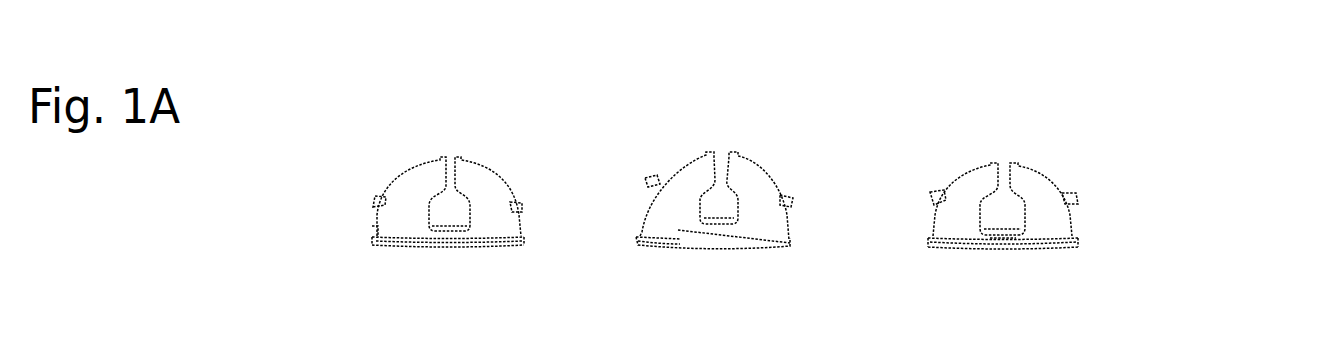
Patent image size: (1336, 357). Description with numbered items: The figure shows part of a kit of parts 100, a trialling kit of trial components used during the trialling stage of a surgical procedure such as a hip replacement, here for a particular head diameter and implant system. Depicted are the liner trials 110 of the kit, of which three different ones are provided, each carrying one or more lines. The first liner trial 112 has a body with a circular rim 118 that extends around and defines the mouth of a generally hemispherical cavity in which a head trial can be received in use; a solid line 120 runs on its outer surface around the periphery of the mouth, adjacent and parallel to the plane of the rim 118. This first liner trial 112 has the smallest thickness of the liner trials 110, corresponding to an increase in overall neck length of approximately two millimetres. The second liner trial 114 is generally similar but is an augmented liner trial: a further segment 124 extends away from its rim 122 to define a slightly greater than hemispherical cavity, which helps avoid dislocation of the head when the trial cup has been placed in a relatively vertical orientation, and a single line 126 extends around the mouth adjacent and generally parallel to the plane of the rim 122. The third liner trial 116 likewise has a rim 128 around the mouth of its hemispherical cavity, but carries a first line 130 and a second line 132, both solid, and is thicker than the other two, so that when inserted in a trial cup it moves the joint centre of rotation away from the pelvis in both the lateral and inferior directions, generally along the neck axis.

The kit of parts 100 is at (1208, 123).
The liner trials 110 is at (313, 205).
The first liner trial 112 is at (535, 166).
The second liner trial 114 is at (814, 168).
The third liner trial 116 is at (1081, 168).
The rim 118 is at (508, 254).
The solid line 120 is at (479, 254).
The rim 122 is at (776, 256).
The further segment 124 is at (661, 259).
The single line 126 is at (728, 254).
The rim 128 is at (1024, 259).
The first line 130 is at (974, 259).
The second line 132 is at (1003, 257).